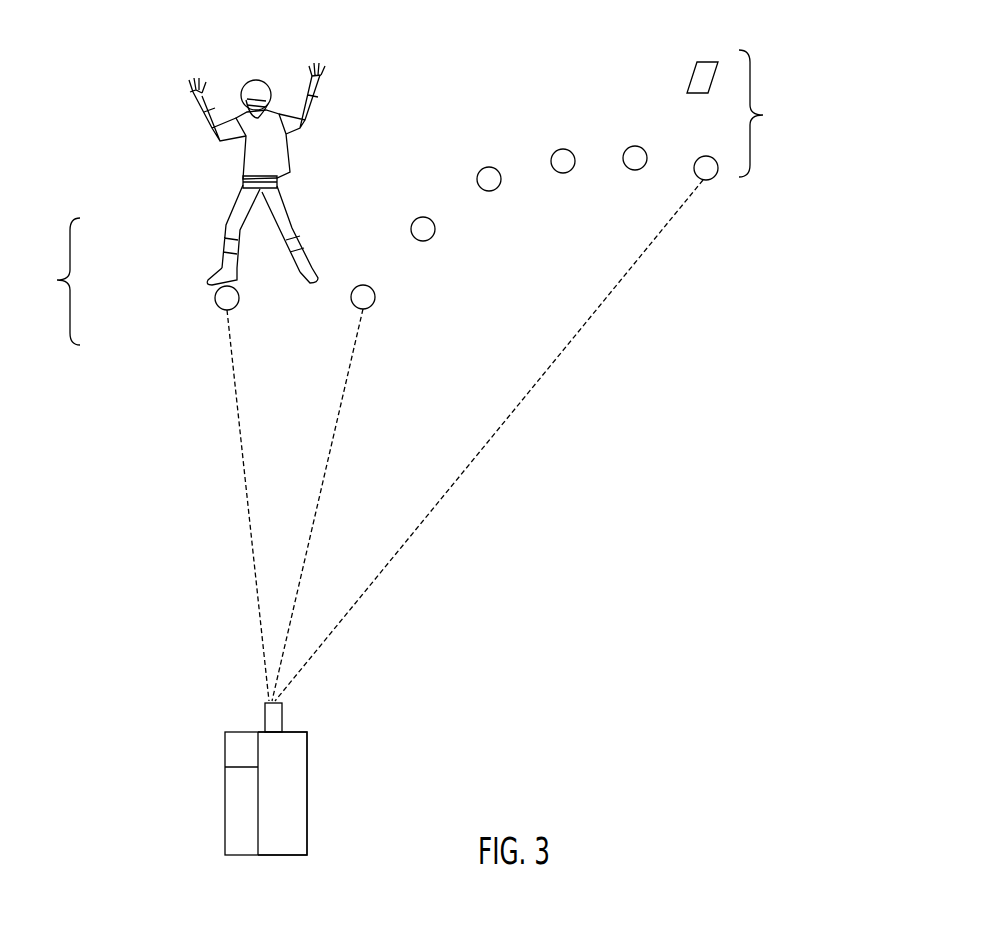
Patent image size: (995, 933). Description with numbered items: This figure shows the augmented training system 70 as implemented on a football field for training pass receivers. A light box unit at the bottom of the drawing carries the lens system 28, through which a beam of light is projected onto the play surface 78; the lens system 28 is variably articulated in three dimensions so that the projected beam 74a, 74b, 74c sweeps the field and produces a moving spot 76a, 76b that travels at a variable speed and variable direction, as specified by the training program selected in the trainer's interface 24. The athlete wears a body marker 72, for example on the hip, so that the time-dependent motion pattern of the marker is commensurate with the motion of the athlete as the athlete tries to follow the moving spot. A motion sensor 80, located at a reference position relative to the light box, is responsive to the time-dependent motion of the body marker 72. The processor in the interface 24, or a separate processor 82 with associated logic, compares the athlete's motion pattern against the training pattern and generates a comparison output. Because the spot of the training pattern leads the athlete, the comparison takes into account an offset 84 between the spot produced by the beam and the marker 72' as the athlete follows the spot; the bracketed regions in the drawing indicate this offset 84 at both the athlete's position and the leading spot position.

The body marker 72 is at (241, 174).
The body marker position 72' is at (666, 59).
The offset 84 is at (411, 197).
The spot 76a is at (216, 299).
The spot 76b is at (376, 297).
The projected beam of light 74a is at (243, 452).
The projected beam of light 74b is at (337, 422).
The projected beam of light 74c is at (625, 275).
The play surface 78 is at (539, 519).
The system 70 is at (308, 776).
The lens system 28 is at (284, 717).
The motion sensor 80 is at (231, 753).
The processor 82 is at (226, 798).
The trainer's interface 24 is at (309, 815).